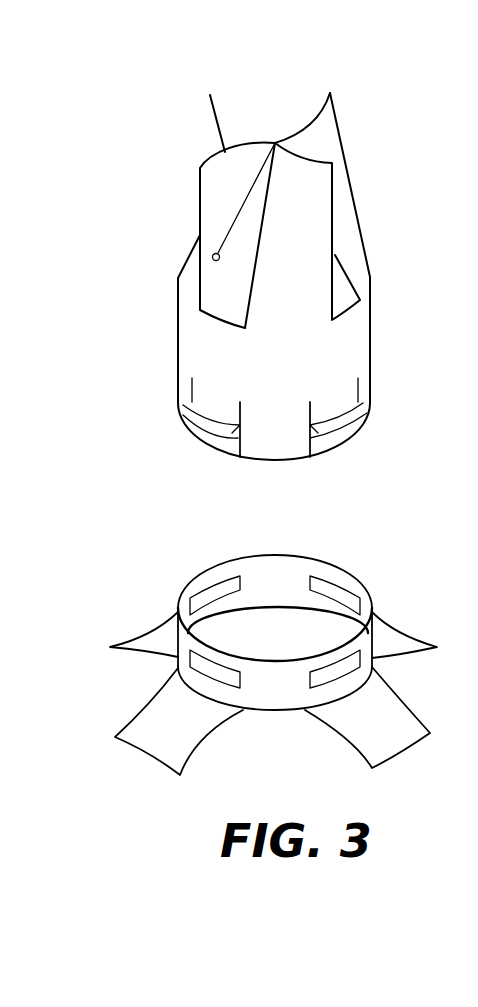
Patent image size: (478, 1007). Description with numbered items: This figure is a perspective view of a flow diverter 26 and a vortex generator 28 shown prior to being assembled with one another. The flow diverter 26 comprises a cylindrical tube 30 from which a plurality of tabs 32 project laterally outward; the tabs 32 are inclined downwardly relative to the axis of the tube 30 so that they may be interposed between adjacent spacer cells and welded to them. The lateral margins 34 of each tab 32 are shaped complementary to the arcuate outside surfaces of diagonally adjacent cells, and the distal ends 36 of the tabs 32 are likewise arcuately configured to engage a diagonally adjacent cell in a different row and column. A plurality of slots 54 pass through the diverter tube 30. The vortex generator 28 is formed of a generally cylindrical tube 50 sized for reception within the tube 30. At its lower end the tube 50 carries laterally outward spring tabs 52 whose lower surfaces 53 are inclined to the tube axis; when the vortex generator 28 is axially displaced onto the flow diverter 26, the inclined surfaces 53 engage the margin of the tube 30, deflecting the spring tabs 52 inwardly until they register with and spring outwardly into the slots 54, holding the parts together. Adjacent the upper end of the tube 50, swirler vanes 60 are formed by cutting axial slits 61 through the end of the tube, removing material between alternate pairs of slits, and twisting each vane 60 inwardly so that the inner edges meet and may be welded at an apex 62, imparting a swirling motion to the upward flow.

The flow diverter 26 is at (273, 649).
The vortex generator 28 is at (271, 278).
The cylindrical tube 30 is at (280, 700).
The tabs 32 is at (392, 736).
The lateral margins 34 is at (392, 699).
The distal ends 36 is at (143, 750).
The cylindrical tube 50 is at (190, 348).
The spring tabs 52 is at (363, 405).
The lower surfaces 53 is at (317, 440).
The slots 54 is at (212, 593).
The swirler vanes 60 is at (307, 202).
The slits 61 is at (260, 208).
The apex 62 is at (275, 143).